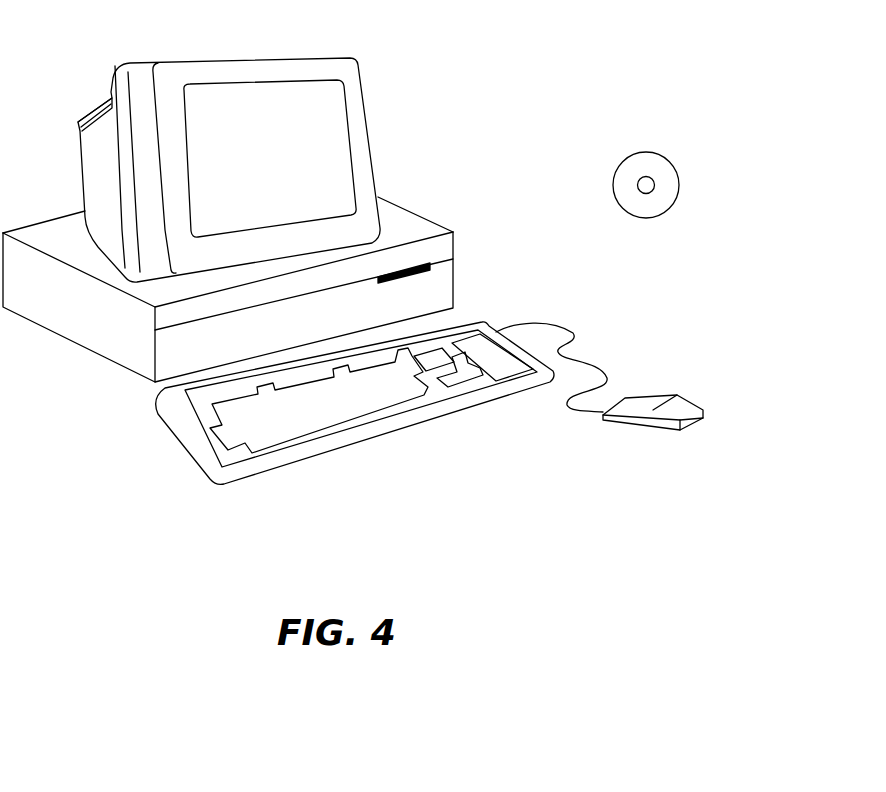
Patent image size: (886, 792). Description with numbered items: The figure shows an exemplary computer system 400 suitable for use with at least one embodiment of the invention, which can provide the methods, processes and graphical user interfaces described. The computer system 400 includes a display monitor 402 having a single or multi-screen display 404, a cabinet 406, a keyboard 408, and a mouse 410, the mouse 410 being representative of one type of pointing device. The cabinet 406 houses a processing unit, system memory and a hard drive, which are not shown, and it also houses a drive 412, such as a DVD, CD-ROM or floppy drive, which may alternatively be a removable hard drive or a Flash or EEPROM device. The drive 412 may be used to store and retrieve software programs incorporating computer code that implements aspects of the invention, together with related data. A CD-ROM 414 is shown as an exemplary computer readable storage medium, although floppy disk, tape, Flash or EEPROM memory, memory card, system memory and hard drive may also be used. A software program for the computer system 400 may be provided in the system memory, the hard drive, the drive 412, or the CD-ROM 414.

The computer system 400 is at (566, 53).
The display monitor 402 is at (373, 167).
The display 404 is at (333, 120).
The cabinet 406 is at (113, 364).
The keyboard 408 is at (367, 442).
The mouse 410 is at (690, 398).
The drive 412 is at (428, 263).
The CD-ROM 414 is at (660, 155).